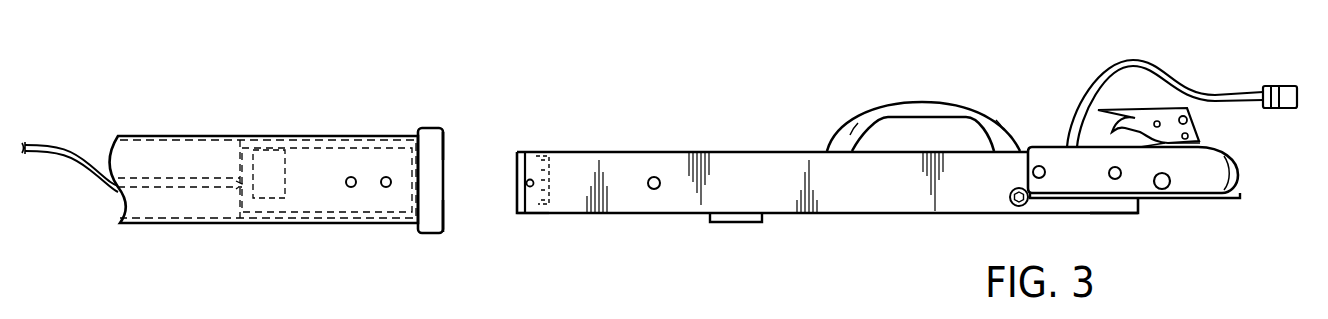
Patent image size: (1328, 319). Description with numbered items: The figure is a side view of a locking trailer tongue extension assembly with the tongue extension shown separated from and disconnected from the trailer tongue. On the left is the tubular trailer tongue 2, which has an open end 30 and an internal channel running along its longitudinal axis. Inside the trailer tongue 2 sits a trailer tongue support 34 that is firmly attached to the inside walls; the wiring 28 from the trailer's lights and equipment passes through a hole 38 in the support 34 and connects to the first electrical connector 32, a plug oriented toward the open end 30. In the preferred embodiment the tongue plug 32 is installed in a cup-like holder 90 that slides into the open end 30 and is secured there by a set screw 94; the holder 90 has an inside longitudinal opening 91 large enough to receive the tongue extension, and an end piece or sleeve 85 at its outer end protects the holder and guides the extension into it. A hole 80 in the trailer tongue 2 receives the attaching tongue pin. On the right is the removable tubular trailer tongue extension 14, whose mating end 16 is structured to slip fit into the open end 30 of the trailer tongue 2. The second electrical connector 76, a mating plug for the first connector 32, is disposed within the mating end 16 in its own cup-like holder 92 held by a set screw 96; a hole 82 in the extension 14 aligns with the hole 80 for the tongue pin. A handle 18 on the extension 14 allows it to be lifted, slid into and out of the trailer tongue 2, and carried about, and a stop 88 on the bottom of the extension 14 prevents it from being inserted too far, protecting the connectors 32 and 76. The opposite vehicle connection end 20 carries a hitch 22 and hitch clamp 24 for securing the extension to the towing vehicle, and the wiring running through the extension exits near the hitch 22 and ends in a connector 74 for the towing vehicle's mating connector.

The tubular trailer tongue 2 is at (317, 225).
The tubular trailer tongue extension 14 is at (817, 148).
The mating end 16 is at (530, 160).
The handle 18 is at (920, 107).
The vehicle connection end 20 is at (1128, 215).
The hitch 22 is at (1233, 168).
The hitch clamp 24 is at (1195, 125).
The wiring 28 is at (62, 144).
The open end 30 is at (444, 207).
The first electrical connector 32 is at (265, 180).
The trailer tongue support 34 is at (242, 162).
The hole 38 is at (238, 184).
The connector 74 is at (1285, 85).
The second electrical connector 76 is at (532, 198).
The hole 80 is at (386, 188).
The hole 82 is at (654, 190).
The end piece or sleeve 85 is at (433, 131).
The stop 88 is at (735, 223).
The cup-like holder 90 is at (367, 145).
The inside longitudinal opening 91 is at (444, 157).
The cup-like holder 92 is at (533, 158).
The set screw 94 is at (351, 188).
The set screw 96 is at (527, 181).